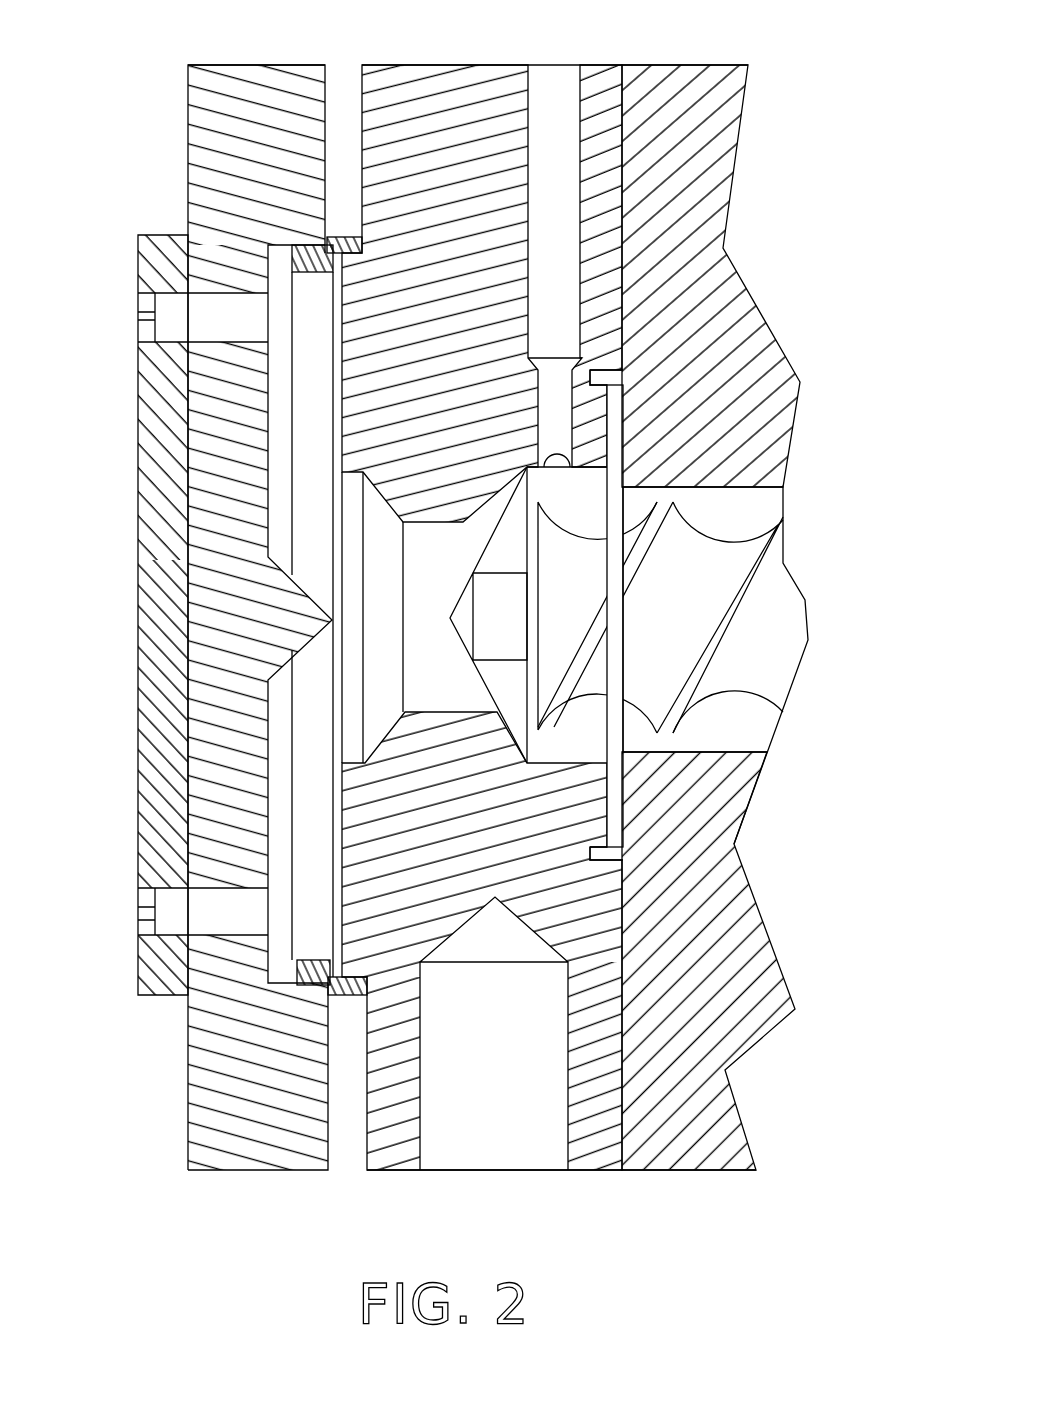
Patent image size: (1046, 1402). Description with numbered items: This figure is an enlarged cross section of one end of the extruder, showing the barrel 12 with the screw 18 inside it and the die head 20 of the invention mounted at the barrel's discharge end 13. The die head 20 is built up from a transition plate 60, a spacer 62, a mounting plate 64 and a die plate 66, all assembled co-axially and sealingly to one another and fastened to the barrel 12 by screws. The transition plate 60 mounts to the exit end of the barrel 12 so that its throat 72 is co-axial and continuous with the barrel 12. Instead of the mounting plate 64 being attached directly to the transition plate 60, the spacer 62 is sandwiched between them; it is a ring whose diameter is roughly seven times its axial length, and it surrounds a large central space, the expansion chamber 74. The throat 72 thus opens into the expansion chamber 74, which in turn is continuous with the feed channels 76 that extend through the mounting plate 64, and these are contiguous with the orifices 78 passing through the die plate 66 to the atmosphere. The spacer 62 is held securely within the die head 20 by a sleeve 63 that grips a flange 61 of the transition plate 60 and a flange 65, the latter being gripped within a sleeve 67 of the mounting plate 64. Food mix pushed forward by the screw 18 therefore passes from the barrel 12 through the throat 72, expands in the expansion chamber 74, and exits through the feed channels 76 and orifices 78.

The die head 20 is at (203, 50).
The barrel 12 is at (745, 1030).
The discharge end 13 is at (718, 507).
The screw 18 is at (780, 620).
The transition plate 60 is at (597, 1172).
The flange 61 is at (323, 348).
The spacer 62 is at (352, 997).
The sleeve 63 is at (343, 237).
The mounting plate 64 is at (185, 1075).
The flange 65 is at (298, 962).
The die plate 66 is at (138, 726).
The sleeve 67 is at (290, 258).
The throat 72 is at (460, 573).
The expansion chamber 74 is at (305, 455).
The feed channels 76 is at (220, 328).
The orifices 78 is at (137, 300).